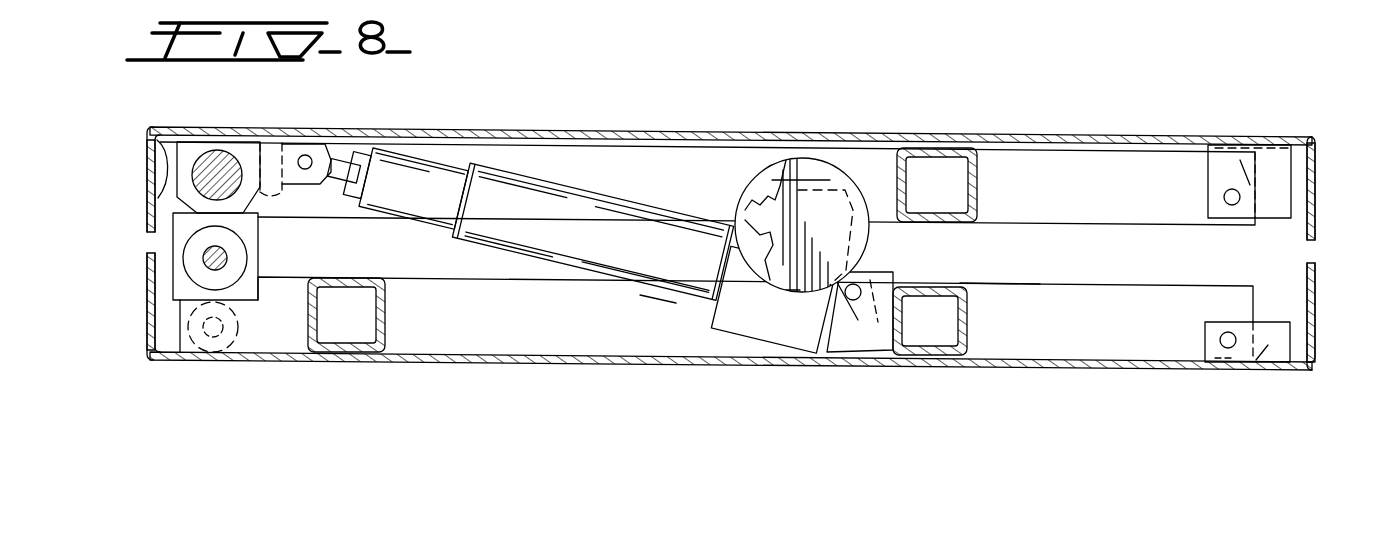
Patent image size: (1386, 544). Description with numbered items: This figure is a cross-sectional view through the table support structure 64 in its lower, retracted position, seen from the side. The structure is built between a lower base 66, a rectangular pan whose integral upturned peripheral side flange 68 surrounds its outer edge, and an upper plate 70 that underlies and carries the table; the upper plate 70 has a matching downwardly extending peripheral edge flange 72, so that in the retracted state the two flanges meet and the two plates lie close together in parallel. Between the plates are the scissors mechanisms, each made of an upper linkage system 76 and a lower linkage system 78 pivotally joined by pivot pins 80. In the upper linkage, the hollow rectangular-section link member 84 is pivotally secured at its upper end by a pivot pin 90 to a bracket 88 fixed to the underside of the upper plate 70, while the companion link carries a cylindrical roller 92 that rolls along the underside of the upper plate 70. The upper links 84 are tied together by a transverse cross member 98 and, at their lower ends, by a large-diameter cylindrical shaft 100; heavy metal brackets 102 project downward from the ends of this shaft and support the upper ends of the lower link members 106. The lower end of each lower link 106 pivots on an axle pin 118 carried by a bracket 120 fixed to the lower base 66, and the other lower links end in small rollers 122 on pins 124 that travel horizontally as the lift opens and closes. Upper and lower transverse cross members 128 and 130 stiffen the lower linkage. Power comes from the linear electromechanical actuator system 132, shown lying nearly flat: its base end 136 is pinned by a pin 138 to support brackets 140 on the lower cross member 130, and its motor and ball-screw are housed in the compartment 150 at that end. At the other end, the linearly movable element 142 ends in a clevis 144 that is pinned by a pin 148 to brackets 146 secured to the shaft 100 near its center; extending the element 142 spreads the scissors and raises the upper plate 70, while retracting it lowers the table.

The table support structure 64 is at (718, 412).
The lower base 66 is at (450, 364).
The peripheral side flange 68 is at (146, 312).
The upper plate 70 is at (613, 132).
The peripheral edge flange 72 is at (152, 195).
The upper linkage system 76 is at (690, 198).
The lower linkage system 78 is at (660, 298).
The pivot pin 80 is at (205, 248).
The link member 84 is at (1084, 196).
The bracket 88 is at (1272, 178).
The pivot pin 90 is at (1232, 188).
The cylindrical roller 92 is at (162, 150).
The transverse cross member 98 is at (982, 175).
The cylindrical shaft 100 is at (226, 152).
The bracket 102 is at (238, 248).
The lower link member 106 is at (1003, 292).
The axle pin 118 is at (1232, 350).
The bracket 120 is at (1262, 365).
The roller 122 is at (240, 327).
The pin 124 is at (208, 345).
The upper transverse cross member 128 is at (405, 316).
The lower transverse cross member 130 is at (966, 334).
The linear electromechanical actuator system 132 is at (602, 192).
The base end 136 is at (872, 265).
The pin 138 is at (766, 330).
The support bracket 140 is at (866, 330).
The linearly movable element 142 is at (420, 159).
The clevis 144 is at (316, 142).
The bracket 146 is at (322, 167).
The pin 148 is at (344, 197).
The compartment 150 is at (830, 158).